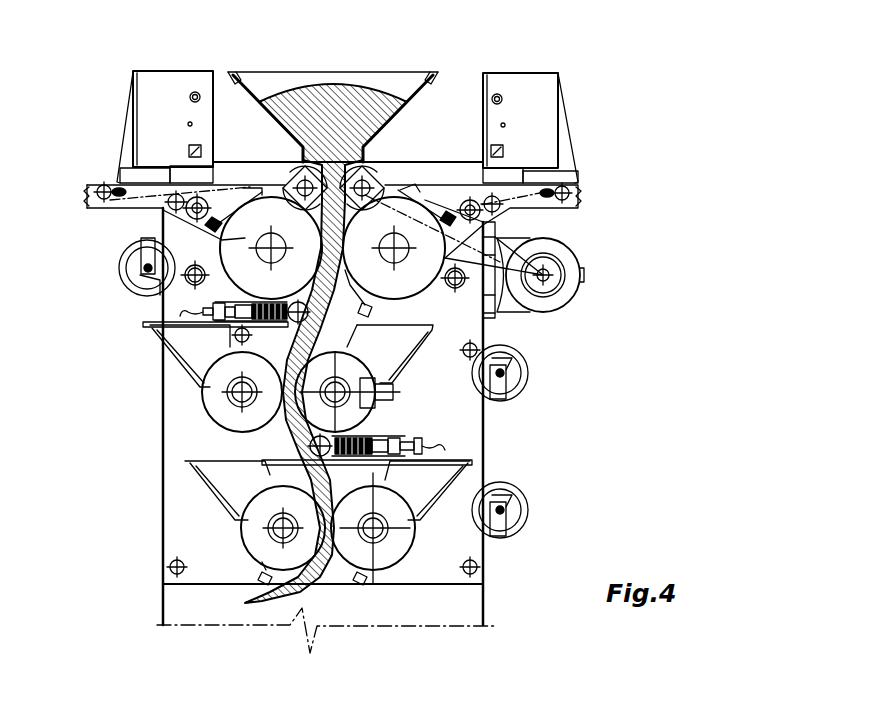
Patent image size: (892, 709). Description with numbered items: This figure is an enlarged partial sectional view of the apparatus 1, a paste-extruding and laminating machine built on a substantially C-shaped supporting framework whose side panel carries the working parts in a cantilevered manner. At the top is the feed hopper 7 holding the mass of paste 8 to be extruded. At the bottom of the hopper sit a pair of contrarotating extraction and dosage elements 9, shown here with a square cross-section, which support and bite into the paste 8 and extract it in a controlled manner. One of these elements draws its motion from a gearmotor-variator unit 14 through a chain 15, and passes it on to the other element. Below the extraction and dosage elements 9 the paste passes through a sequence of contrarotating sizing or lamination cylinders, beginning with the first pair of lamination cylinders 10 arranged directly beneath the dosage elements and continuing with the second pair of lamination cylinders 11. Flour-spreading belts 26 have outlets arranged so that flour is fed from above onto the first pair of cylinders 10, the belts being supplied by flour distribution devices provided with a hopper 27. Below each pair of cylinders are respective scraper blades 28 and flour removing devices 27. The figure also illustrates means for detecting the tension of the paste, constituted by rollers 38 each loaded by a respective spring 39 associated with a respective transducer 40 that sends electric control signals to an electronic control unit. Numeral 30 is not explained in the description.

The apparatus 1 is at (147, 588).
The feed hopper 7 is at (337, 73).
The paste 8 is at (367, 100).
The extraction and dosage elements 9 is at (285, 178).
The lamination cylinders 10 is at (207, 230).
The lamination cylinders 11 is at (200, 392).
The gearmotor-variator unit 14 is at (520, 237).
The chain 15 is at (503, 237).
The flour-spreading belts 26 is at (548, 185).
The hopper 27 is at (143, 107).
The scraper blades 28 is at (372, 310).
The hand wheels 30 is at (118, 258).
The rollers 38 is at (170, 335).
The spring 39 is at (162, 318).
The transducer 40 is at (140, 305).